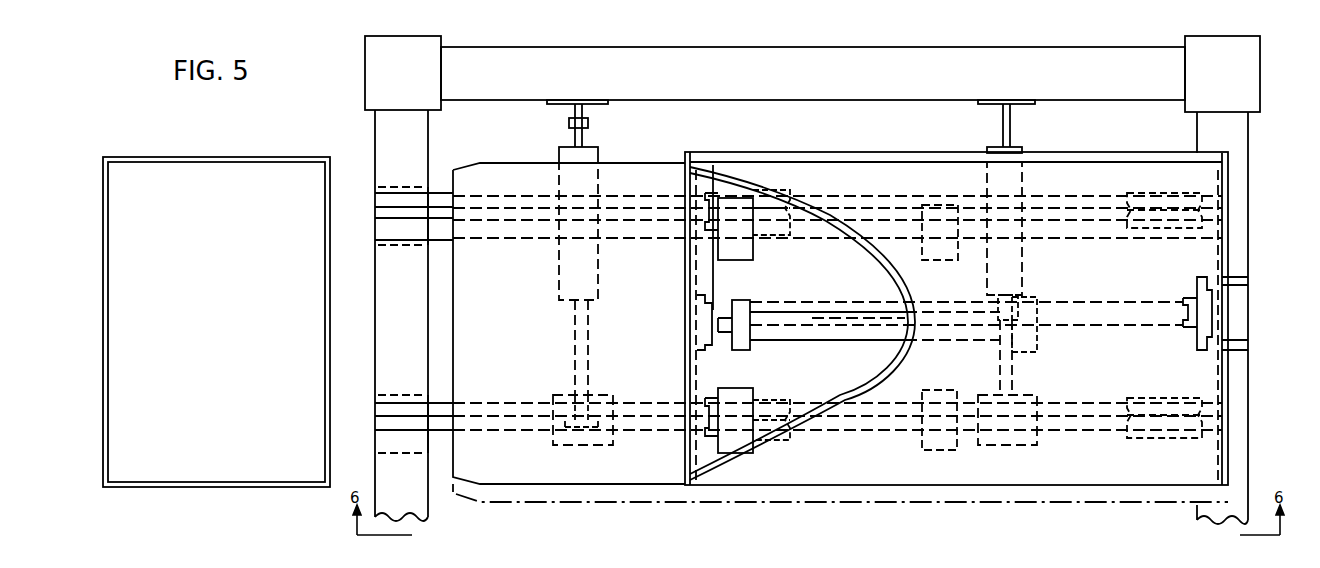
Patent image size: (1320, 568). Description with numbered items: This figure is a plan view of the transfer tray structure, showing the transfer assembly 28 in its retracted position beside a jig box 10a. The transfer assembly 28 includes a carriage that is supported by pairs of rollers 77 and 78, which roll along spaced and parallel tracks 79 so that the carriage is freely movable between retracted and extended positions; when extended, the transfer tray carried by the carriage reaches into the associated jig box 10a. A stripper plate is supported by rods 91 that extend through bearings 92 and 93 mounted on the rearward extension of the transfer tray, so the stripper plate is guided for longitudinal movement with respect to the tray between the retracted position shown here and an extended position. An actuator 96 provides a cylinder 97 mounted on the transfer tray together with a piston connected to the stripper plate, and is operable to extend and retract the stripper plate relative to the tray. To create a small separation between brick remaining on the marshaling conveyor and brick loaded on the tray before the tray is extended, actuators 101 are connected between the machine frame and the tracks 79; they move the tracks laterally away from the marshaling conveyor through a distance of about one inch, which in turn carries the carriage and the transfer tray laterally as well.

The jig box 10a is at (218, 487).
The transfer assembly 28 is at (830, 486).
The tracks 79 is at (488, 213).
The actuators 101 is at (595, 150).
The bearing 93 is at (937, 259).
The rollers 78 is at (1140, 195).
The bearing 92 is at (738, 253).
The rollers 77 is at (762, 193).
The rods 91 is at (812, 236).
The cylinder 97 is at (825, 333).
The actuator 96 is at (812, 322).